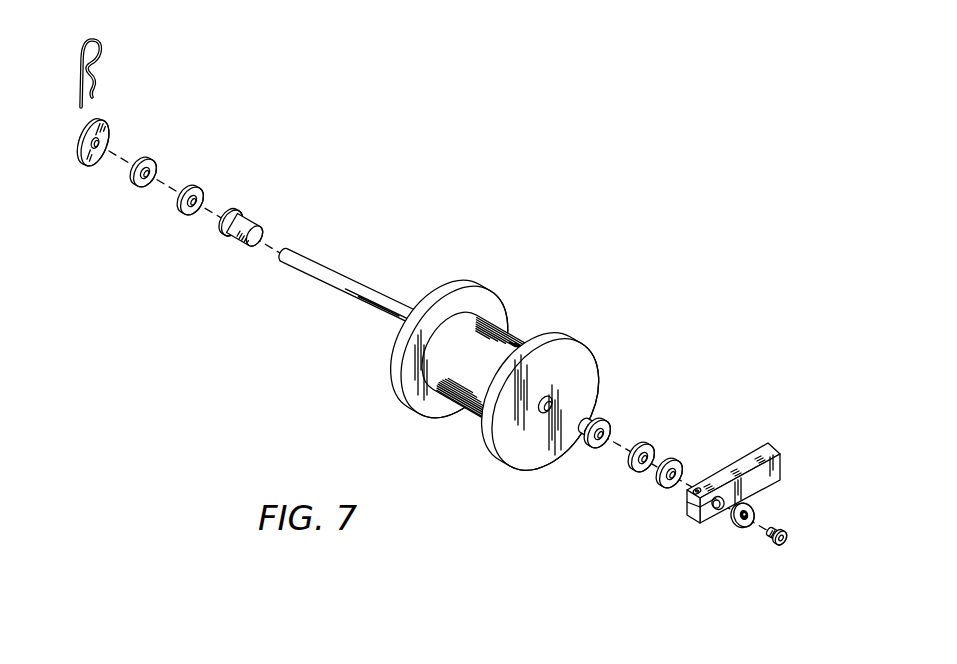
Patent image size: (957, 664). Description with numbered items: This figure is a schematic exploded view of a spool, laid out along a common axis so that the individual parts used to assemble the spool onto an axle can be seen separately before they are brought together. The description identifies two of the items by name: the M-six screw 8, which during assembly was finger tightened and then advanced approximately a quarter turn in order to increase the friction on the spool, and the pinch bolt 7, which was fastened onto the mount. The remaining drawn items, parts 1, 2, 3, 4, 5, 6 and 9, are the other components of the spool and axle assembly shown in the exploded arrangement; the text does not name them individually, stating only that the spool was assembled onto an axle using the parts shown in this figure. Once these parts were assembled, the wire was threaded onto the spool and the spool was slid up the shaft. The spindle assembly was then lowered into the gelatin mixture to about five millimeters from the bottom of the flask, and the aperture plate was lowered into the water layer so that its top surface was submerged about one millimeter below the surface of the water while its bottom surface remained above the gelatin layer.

The mounting block 1 is at (787, 458).
The washers 2 is at (678, 460).
The hairpin cotter pin 3 is at (97, 37).
The shaft 4 is at (360, 282).
The retaining disk 5 is at (103, 118).
The bushing 6 is at (250, 220).
The pinch bolt 7 is at (753, 503).
The M6 screw 8 is at (787, 532).
The spool 9 is at (483, 282).